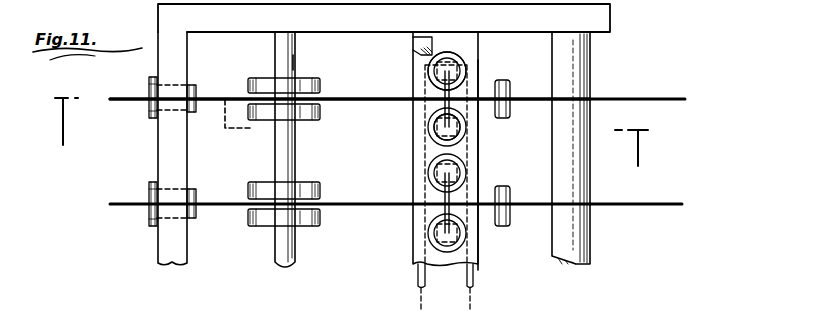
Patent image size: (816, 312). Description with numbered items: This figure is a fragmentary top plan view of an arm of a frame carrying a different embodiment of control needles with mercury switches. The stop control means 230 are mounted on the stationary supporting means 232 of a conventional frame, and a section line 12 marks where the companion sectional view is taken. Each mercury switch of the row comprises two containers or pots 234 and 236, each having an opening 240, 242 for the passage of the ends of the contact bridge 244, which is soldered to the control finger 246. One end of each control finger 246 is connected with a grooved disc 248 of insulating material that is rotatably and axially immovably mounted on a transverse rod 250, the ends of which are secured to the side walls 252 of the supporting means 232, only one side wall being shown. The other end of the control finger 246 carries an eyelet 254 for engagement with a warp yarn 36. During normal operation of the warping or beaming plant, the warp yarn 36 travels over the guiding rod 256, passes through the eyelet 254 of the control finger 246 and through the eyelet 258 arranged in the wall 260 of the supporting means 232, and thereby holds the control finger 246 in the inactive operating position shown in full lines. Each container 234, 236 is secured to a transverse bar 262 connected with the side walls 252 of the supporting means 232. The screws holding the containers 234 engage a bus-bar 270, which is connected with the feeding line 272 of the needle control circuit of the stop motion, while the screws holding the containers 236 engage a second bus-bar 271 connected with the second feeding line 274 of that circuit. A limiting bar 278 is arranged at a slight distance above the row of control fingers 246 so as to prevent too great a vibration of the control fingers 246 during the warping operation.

The section line 12 is at (351, 132).
The warp yarn 36 is at (628, 97).
The stop control means 230 is at (356, 111).
The supporting means 232 is at (412, 41).
The container 234 is at (460, 136).
The container 236 is at (462, 60).
The opening 240 is at (466, 130).
The opening 242 is at (447, 65).
The contact bridge 244 is at (443, 110).
The control finger 246 is at (375, 97).
The grooved disc 248 is at (254, 78).
The transverse rod 250 is at (294, 62).
The side wall 252 is at (267, 25).
The eyelet 254 is at (505, 84).
The guiding rod 256 is at (578, 180).
The eyelet 258 is at (149, 86).
The wall 260 is at (158, 148).
The transverse bar 262 is at (478, 166).
The bus-bar 270 is at (418, 270).
The second bus-bar 271 is at (483, 231).
The feeding line 272 is at (420, 306).
The second feeding line 274 is at (472, 306).
The limiting bar 278 is at (401, 55).